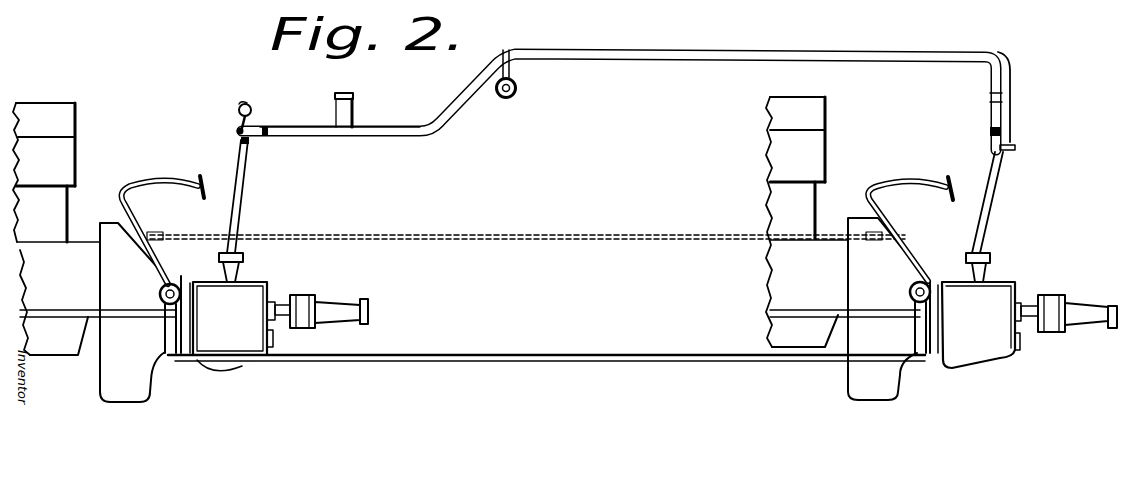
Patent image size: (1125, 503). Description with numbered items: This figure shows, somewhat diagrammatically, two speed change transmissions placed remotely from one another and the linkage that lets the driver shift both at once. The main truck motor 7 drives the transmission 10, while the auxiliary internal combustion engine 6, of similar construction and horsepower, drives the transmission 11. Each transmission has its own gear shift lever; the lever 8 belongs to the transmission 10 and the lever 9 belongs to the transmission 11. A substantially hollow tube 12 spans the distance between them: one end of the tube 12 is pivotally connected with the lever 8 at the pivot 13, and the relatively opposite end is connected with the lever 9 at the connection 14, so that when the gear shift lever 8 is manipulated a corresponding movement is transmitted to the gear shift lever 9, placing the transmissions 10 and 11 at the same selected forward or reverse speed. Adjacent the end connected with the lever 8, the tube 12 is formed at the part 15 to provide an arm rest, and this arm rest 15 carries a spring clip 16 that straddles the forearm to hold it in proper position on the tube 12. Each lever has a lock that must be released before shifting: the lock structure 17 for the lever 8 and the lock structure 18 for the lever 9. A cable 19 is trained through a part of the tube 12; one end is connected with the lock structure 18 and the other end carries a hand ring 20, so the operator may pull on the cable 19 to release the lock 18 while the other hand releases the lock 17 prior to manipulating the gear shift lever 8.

The internal combustion engine 6 is at (768, 200).
The main truck motor 7 is at (78, 163).
The gear shift lever 8 is at (238, 99).
The gear shift lever 9 is at (992, 163).
The transmission 10 is at (257, 300).
The transmission 11 is at (1003, 296).
The hollow tube 12 is at (682, 50).
The pivotal connection 13 is at (237, 131).
The connection 14 is at (990, 130).
The arm rest 15 is at (398, 126).
The spring clip 16 is at (335, 108).
The lock structure 17 is at (250, 147).
The lock structure 18 is at (1003, 181).
The cable 19 is at (505, 52).
The hand ring 20 is at (510, 98).